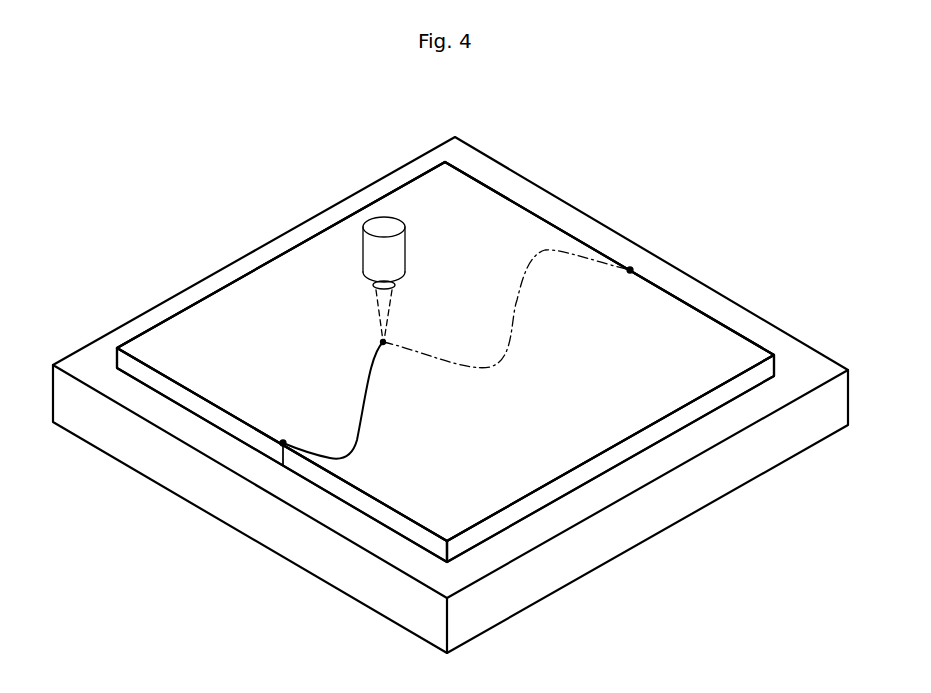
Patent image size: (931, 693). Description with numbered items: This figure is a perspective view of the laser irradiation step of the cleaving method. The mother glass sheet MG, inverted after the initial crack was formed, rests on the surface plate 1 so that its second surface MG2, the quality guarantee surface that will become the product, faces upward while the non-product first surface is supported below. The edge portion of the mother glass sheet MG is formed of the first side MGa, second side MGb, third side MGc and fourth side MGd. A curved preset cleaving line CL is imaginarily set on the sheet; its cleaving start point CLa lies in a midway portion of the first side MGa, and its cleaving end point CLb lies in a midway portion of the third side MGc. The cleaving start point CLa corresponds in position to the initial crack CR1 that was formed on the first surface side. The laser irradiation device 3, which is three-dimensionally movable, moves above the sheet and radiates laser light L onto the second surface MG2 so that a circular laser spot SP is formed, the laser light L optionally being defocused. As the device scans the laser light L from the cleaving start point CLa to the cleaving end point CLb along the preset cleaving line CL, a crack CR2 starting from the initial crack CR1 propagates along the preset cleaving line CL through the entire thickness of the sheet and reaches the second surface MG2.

The surface plate 1 is at (697, 482).
The laser irradiation device 3 is at (383, 222).
The mother glass sheet MG is at (677, 293).
The second surface MG2 is at (283, 280).
The first side MGa is at (217, 407).
The second side MGb is at (547, 487).
The third side MGc is at (488, 185).
The fourth side MGd is at (187, 305).
The laser light L is at (392, 308).
The laser spot SP is at (383, 342).
The preset cleaving line CL is at (538, 247).
The cleaving start point CLa is at (283, 443).
The cleaving end point CLb is at (633, 265).
The initial crack CR1 is at (283, 465).
The crack CR2 is at (363, 383).